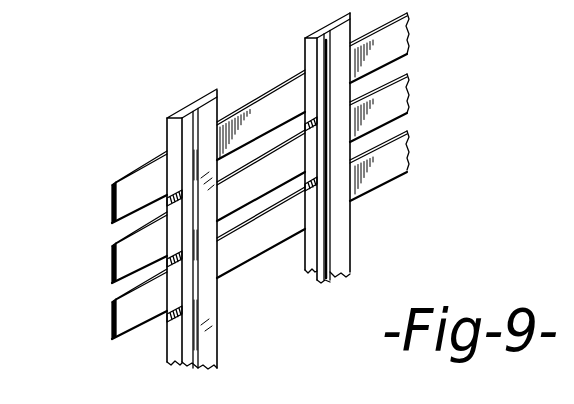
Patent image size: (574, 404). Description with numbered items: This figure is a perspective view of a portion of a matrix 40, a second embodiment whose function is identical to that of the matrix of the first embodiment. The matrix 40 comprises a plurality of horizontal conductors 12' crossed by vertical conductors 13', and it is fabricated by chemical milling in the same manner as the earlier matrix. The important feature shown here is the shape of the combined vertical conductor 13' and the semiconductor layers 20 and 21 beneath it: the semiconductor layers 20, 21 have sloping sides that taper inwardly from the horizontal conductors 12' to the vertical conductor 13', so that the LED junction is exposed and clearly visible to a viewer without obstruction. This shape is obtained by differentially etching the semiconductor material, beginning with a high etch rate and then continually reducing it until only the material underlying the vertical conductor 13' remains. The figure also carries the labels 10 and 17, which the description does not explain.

The fence assembly 10 is at (406, 90).
The horizontal conductors 12' is at (283, 176).
The vertical conductor 13' is at (359, 148).
The post 17 is at (175, 335).
The semiconductor layer 20 is at (188, 106).
The semiconductor layer 21 is at (321, 277).
The matrix 40 is at (466, 220).